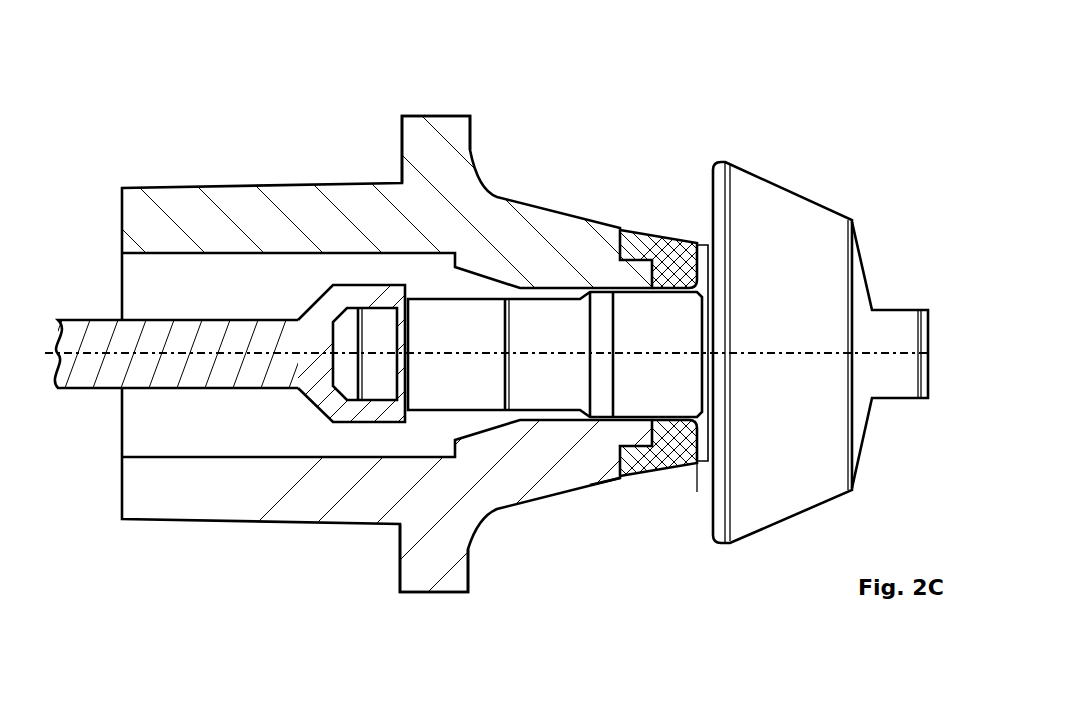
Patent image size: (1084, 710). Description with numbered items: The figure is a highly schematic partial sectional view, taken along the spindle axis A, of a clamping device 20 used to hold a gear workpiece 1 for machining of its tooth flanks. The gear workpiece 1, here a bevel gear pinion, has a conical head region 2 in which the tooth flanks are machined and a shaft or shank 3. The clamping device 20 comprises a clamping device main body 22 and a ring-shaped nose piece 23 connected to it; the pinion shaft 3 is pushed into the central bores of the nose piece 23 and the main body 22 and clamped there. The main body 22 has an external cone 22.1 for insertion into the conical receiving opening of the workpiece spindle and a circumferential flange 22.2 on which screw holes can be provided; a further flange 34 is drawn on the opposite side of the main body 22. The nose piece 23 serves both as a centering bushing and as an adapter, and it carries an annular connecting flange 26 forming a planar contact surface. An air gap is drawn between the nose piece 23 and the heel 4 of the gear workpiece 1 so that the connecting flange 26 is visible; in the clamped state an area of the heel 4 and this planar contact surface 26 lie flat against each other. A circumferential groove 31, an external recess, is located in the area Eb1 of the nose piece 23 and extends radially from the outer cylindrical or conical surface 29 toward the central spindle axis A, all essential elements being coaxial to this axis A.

The clamping device 20 is at (750, 69).
The clamping device main body 22 is at (542, 350).
The external cone 22.1 is at (253, 184).
The circumferential flange 22.2 is at (412, 127).
The lower flange 34 is at (513, 507).
The outer cylindrical or conical surface 29 is at (627, 473).
The shaft or shank 3 is at (520, 296).
The circumferential groove 31 is at (675, 255).
The nose piece 23 is at (630, 458).
The heel 4 is at (705, 245).
The annular connecting flange 26 is at (697, 440).
The area of the nose piece Eb1 is at (692, 494).
The gear workpiece 1 is at (820, 316).
The conical head region 2 is at (758, 182).
The spindle axis A is at (497, 353).